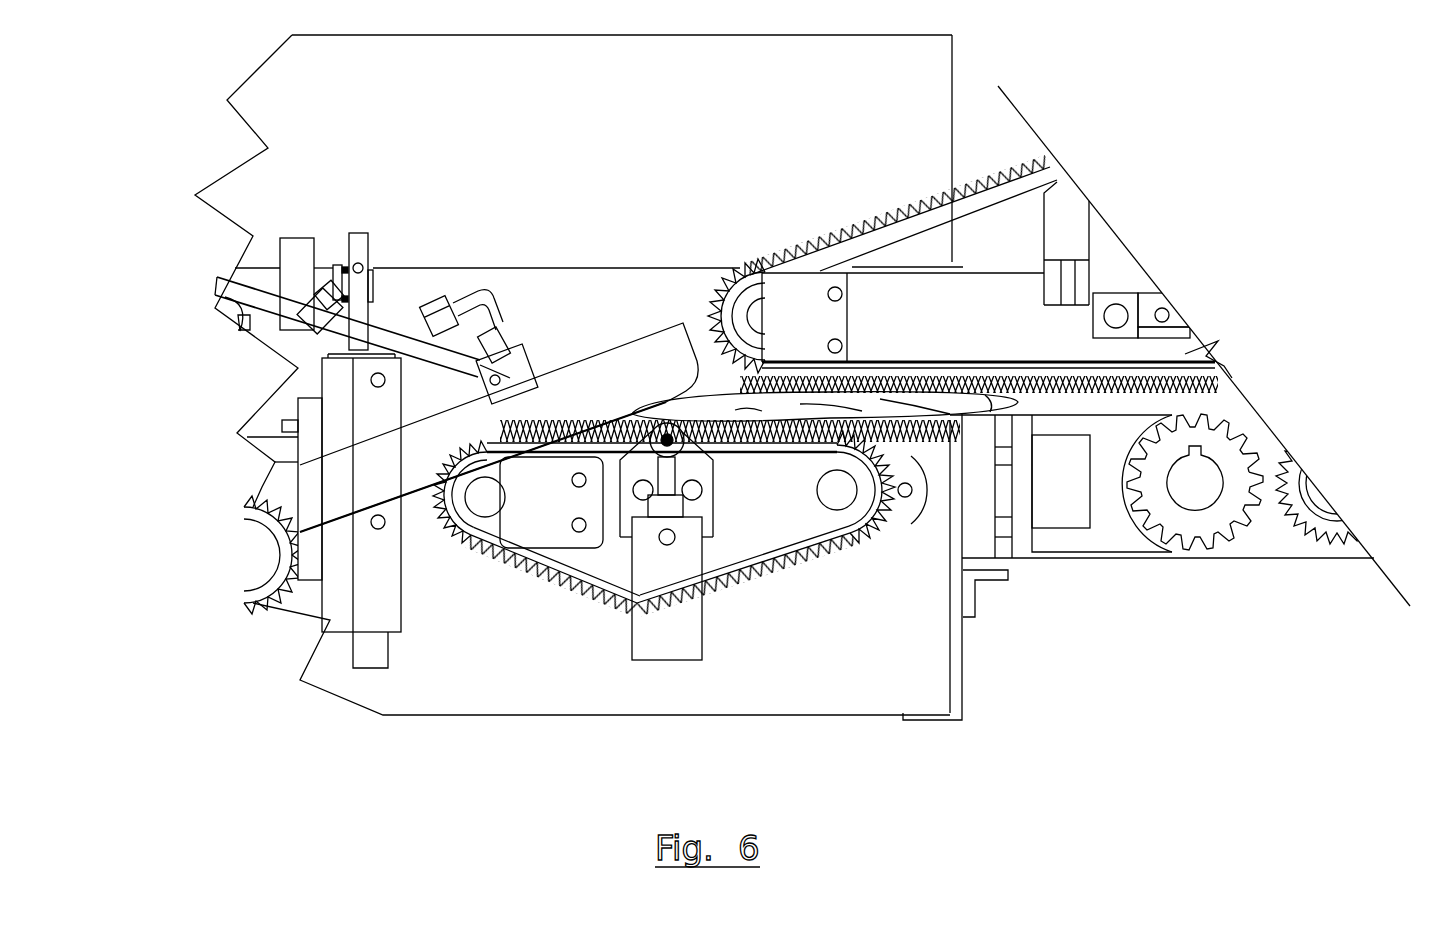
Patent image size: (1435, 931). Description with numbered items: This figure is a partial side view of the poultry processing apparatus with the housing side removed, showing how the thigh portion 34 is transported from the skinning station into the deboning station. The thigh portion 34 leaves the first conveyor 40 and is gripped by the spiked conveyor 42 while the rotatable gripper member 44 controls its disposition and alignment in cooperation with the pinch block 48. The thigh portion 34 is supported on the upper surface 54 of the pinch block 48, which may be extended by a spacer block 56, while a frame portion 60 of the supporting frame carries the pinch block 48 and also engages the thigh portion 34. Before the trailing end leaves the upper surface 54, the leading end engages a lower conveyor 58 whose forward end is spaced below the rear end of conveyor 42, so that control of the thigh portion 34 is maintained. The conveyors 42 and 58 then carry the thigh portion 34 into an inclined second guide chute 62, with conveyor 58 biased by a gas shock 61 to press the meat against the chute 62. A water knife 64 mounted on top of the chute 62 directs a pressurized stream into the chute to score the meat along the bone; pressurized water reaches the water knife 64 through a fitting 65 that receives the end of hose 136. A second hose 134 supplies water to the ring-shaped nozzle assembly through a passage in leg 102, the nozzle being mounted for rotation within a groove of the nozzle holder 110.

The hose 134 is at (262, 278).
The leg 102 is at (360, 233).
The hose 136 is at (405, 318).
The fitting 65 is at (532, 322).
The water knife 64 is at (215, 284).
The second guide chute 62 is at (530, 410).
The nozzle holder 110 is at (337, 545).
The conveyor 42 is at (868, 224).
The thigh portion 34 is at (982, 405).
The upper surface 54 is at (1073, 410).
The conveyor 58 is at (787, 612).
The gas shock 61 is at (653, 660).
The frame portion 60 is at (987, 523).
The spacer block 56 is at (1015, 435).
The pinch block 48 is at (1077, 538).
The gripper member 44 is at (1187, 528).
The conveyor 40 is at (1322, 530).